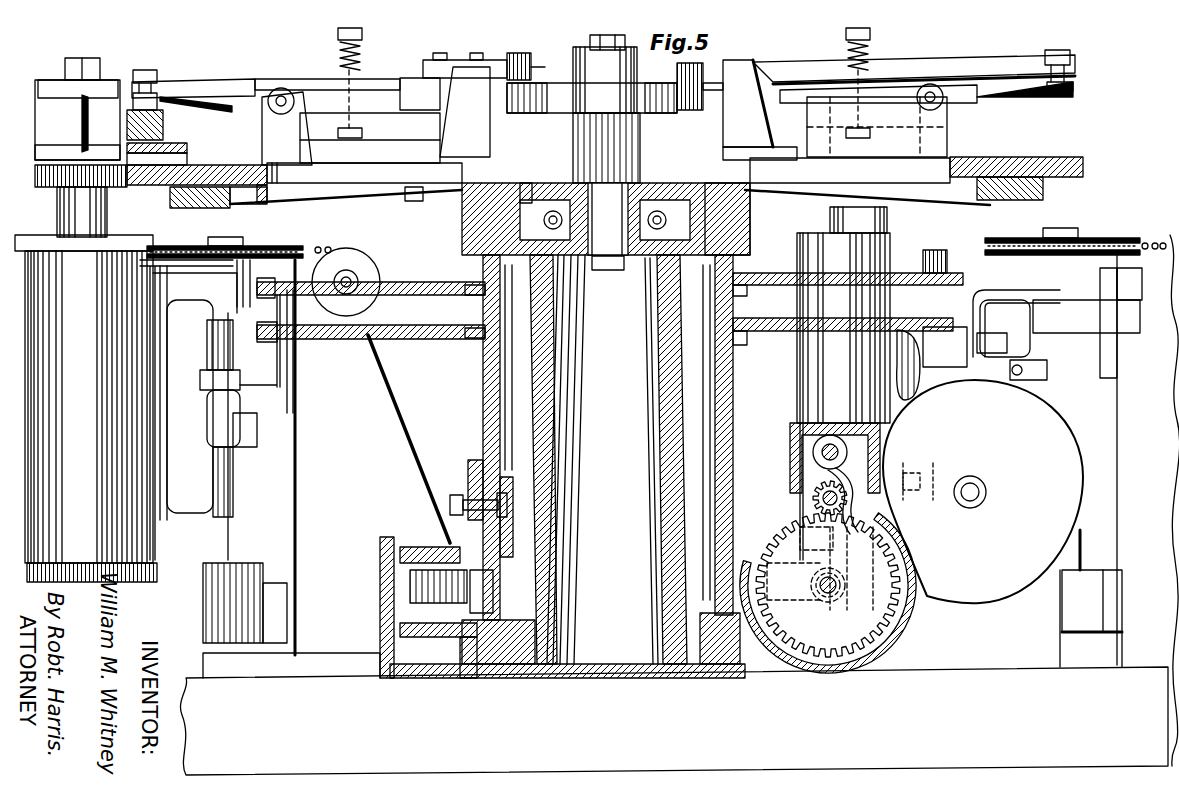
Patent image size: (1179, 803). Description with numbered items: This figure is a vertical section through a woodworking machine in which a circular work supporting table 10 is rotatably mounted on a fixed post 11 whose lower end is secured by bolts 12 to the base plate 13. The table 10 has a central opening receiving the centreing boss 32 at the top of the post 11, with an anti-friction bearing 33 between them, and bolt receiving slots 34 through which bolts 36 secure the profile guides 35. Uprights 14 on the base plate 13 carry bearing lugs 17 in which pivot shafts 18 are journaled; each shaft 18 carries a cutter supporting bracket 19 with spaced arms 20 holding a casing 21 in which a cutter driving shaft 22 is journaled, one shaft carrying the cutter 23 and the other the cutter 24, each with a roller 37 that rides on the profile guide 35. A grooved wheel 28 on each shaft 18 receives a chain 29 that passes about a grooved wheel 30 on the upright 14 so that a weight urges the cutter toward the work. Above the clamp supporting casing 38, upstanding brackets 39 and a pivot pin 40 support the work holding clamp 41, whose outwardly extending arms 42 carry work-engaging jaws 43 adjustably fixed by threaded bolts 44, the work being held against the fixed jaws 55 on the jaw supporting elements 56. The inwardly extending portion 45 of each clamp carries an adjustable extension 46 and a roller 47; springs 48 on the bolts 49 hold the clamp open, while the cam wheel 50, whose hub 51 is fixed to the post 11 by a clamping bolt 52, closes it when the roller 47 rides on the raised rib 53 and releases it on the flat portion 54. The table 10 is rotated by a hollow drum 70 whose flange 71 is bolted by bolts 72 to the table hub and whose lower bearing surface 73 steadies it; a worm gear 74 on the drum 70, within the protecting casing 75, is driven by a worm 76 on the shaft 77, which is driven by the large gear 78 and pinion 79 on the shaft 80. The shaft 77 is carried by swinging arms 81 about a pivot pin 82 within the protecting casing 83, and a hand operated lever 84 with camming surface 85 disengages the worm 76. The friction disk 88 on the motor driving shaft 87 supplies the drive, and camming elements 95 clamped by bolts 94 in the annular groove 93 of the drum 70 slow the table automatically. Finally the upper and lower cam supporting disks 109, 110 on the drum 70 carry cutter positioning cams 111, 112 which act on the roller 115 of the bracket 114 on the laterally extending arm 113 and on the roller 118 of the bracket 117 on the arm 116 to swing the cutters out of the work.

The work supporting table 10 is at (200, 206).
The post 11 is at (545, 428).
The bolts 12 is at (705, 630).
The base plate 13 is at (957, 676).
The upright 14 is at (380, 400).
The bearing lugs 17 is at (203, 606).
The pivot shaft 18 is at (241, 468).
The cutter supporting bracket 19 is at (165, 426).
The spaced arms 20 is at (186, 300).
The casing 21 is at (60, 240).
The cutter driving shaft 22 is at (66, 210).
The cutter 23 is at (55, 110).
The cutter 24 is at (860, 116).
The grooved wheel 28 is at (285, 246).
The chain 29 is at (320, 247).
The grooved wheel 30 is at (371, 264).
The centreing boss 32 is at (640, 185).
The anti-friction bearing 33 is at (633, 262).
The bolt receiving slots 34 is at (378, 192).
The profile guide 35 is at (145, 188).
The bolts 36 is at (253, 206).
The roller 37 is at (35, 174).
The clamp supporting casing 38 is at (412, 160).
The upstanding brackets 39 is at (266, 130).
The pivot pin 40 is at (281, 88).
The work holding clamp 41 is at (926, 72).
The outwardly extending arms 42 is at (214, 79).
The work-engaging jaws 43 is at (153, 102).
The threaded bolts 44 is at (146, 70).
The inwardly extending portion 45 is at (400, 78).
The adjustable extension 46 is at (495, 60).
The roller 47 is at (535, 49).
The spring 48 is at (334, 62).
The bolt 49 is at (362, 34).
The cam wheel 50 is at (550, 80).
The hub 51 is at (622, 50).
The clamping bolt 52 is at (582, 292).
The raised rib 53 is at (566, 86).
The flat portion 54 is at (652, 97).
The fixed jaws 55 is at (168, 143).
The jaw supporting elements 56 is at (190, 158).
The hollow drum 70 is at (735, 372).
The flange portion 71 is at (717, 172).
The bolts 72 is at (525, 183).
The bearing surface 73 is at (700, 612).
The worm gear 74 is at (383, 592).
The protecting casing 75 is at (380, 552).
The worm 76 is at (840, 600).
The shaft 77 is at (830, 598).
The large gear 78 is at (874, 620).
The pinion 79 is at (802, 490).
The shaft 80 is at (812, 499).
The swinging arms 81 is at (854, 478).
The pivot pin 82 is at (833, 436).
The protecting casing 83 is at (926, 576).
The hand operated lever 84 is at (897, 359).
The camming surface 85 is at (926, 481).
The driving shaft 87 is at (988, 491).
The friction disk 88 is at (1067, 519).
The annular groove 93 is at (664, 434).
The bolts 94 is at (450, 505).
The camming element 95 is at (470, 462).
The upper cam supporting disk 109 is at (440, 278).
The lower cam supporting disk 110 is at (447, 340).
The cutter positioning cam 111 is at (780, 292).
The cutter positioning cam 112 is at (310, 342).
The laterally extending arm 113 is at (995, 340).
The bracket 114 is at (947, 350).
The roller 115 is at (937, 245).
The laterally extending arm 116 is at (258, 431).
The bracket 117 is at (241, 399).
The roller 118 is at (218, 356).